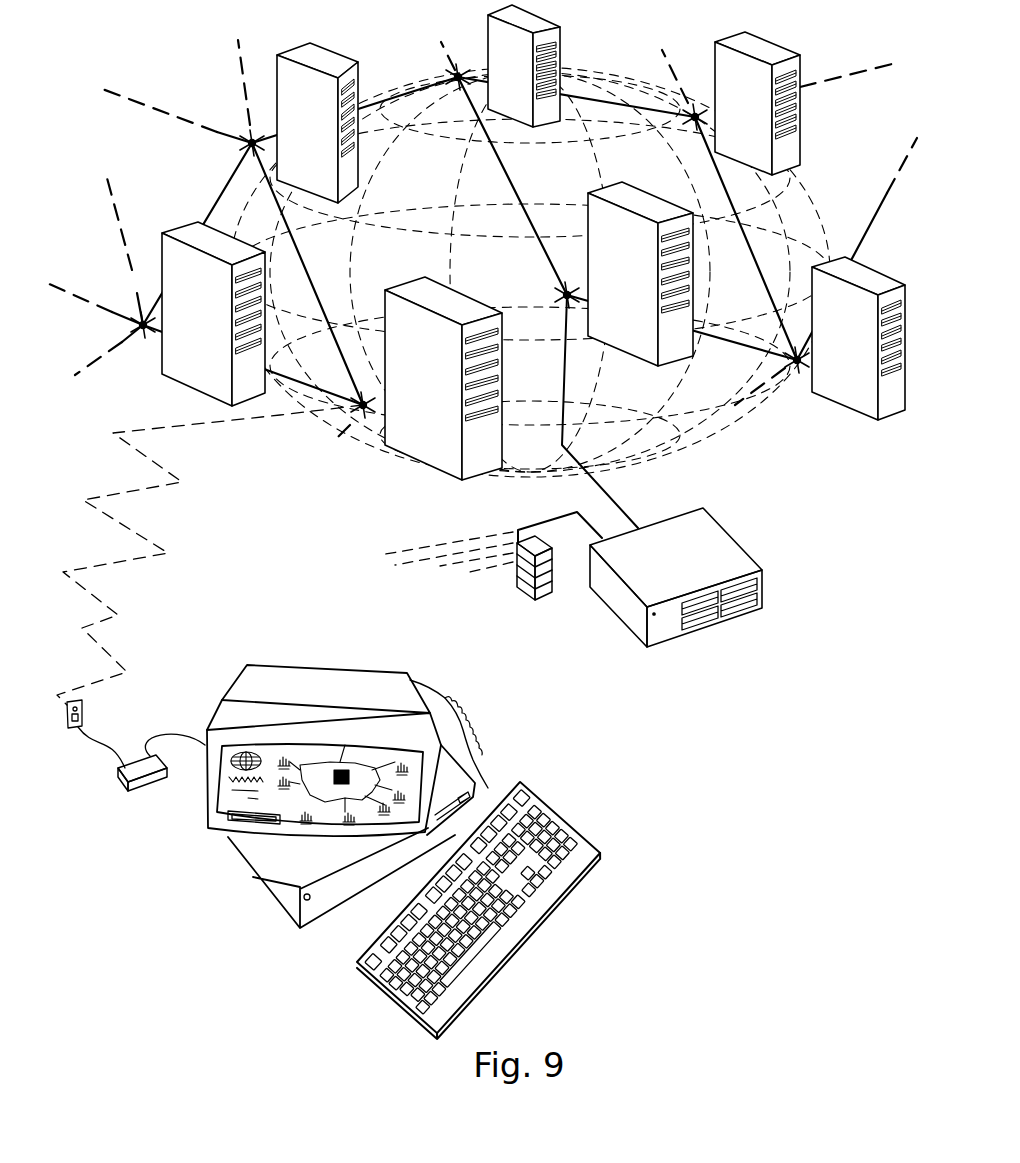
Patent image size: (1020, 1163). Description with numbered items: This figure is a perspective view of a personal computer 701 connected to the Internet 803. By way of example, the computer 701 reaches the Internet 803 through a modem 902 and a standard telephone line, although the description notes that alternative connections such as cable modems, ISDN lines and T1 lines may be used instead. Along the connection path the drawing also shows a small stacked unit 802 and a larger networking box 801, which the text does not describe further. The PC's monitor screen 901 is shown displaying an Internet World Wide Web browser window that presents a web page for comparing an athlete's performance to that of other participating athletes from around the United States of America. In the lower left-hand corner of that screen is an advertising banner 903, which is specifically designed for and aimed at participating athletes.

The personal computer 701 is at (290, 920).
The router 801 is at (763, 608).
The modem stack 802 is at (517, 573).
The Internet 803 is at (330, 448).
The monitor screen 901 is at (223, 780).
The modem 902 is at (127, 787).
The advertising banner 903 is at (255, 820).